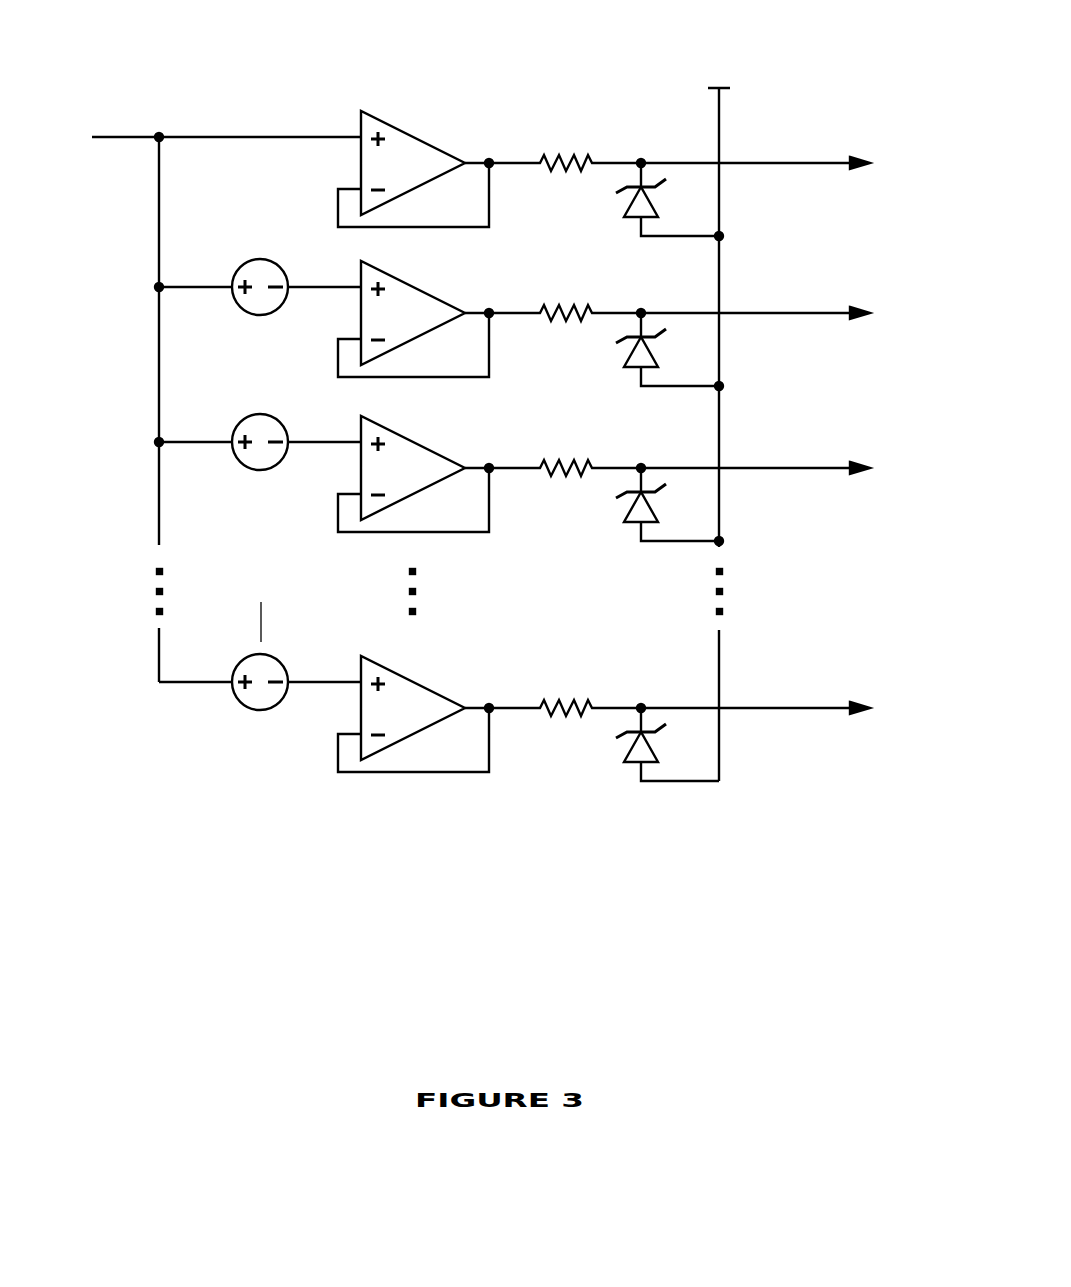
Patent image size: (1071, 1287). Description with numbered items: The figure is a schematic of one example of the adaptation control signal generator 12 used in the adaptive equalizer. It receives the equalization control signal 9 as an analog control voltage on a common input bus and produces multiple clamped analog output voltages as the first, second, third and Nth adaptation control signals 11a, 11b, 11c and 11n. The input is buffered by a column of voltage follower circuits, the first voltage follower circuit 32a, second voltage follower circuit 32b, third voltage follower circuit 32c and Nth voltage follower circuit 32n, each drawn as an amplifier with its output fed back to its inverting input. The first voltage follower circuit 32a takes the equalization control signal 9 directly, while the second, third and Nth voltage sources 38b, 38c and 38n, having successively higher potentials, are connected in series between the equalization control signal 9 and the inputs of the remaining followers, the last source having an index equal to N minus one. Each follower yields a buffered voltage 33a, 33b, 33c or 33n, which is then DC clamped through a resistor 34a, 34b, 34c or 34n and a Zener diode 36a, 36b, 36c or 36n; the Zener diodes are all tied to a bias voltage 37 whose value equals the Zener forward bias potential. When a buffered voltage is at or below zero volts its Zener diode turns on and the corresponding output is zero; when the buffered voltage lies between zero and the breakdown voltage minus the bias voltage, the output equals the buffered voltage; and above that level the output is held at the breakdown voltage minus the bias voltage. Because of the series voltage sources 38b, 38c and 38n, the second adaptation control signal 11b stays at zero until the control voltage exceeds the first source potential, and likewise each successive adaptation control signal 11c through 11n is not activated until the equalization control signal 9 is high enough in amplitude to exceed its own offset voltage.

The equalization control signal 9 is at (126, 137).
The adaptation control signal generator 12 is at (254, 906).
The first voltage follower circuit 32a is at (420, 138).
The second voltage follower circuit 32b is at (420, 288).
The third voltage follower circuit 32c is at (420, 443).
The Nth voltage follower circuit 32n is at (420, 683).
The first buffered voltage 33a is at (490, 160).
The second buffered voltage 33b is at (490, 310).
The third buffered voltage 33c is at (490, 465).
The Nth buffered voltage 33n is at (490, 705).
The first resistor 34a is at (590, 160).
The second resistor 34b is at (590, 310).
The third resistor 34c is at (590, 465).
The Nth resistor 34n is at (590, 705).
The first Zener diode 36a is at (622, 208).
The second Zener diode 36b is at (622, 358).
The third Zener diode 36c is at (622, 513).
The Nth Zener diode 36n is at (622, 753).
The bias voltage 37 is at (713, 91).
The second voltage source 38b is at (238, 307).
The third voltage source 38c is at (238, 462).
The Nth voltage source 38n is at (238, 702).
The first adaptation control signal 11a is at (816, 161).
The second adaptation control signal 11b is at (816, 311).
The third adaptation control signal 11c is at (816, 466).
The Nth adaptation control signal 11n is at (816, 706).